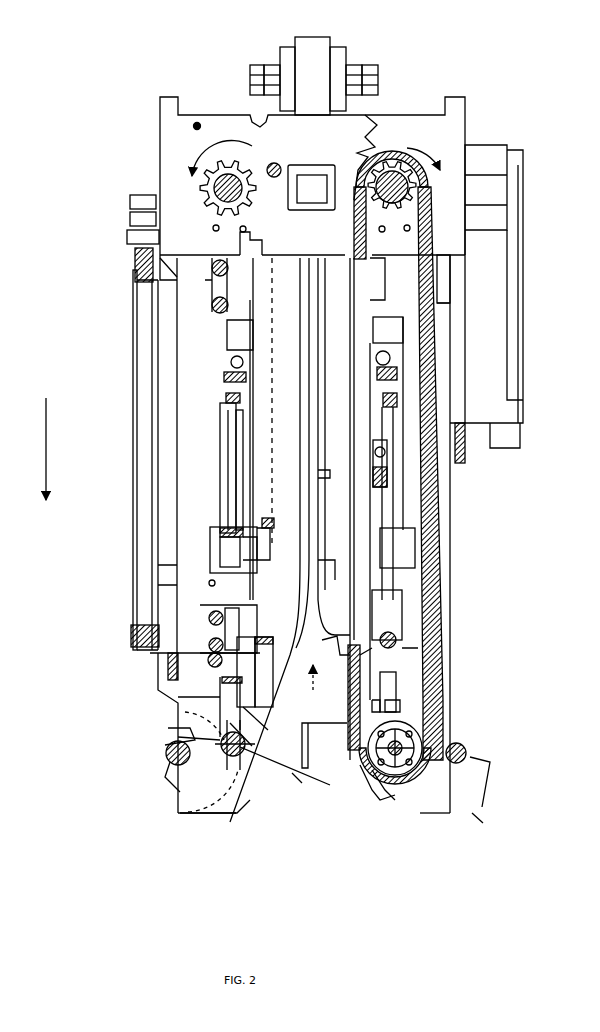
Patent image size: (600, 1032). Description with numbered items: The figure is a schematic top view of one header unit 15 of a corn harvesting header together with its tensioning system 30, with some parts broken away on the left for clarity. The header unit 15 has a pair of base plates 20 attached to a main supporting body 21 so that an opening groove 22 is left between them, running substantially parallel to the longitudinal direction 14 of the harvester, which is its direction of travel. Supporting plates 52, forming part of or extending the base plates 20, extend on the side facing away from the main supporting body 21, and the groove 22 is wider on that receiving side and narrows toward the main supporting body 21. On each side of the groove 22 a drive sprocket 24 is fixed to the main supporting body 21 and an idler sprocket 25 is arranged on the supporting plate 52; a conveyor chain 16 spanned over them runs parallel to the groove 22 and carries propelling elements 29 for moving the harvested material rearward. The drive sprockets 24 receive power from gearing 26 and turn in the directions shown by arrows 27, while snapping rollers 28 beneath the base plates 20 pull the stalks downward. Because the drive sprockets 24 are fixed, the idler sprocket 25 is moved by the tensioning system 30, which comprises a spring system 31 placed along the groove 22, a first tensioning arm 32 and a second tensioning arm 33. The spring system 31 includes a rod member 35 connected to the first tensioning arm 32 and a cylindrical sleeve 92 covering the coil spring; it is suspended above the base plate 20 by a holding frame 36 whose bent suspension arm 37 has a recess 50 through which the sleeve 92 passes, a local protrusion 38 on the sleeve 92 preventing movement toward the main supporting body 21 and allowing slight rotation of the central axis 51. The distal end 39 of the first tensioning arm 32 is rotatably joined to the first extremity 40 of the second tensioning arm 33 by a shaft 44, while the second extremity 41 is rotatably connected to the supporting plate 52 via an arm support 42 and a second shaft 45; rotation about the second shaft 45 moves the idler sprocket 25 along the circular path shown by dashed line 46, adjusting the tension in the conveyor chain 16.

The longitudinal direction 14 is at (33, 449).
The header unit 15 is at (148, 74).
The conveyor chain 16 is at (445, 531).
The base plate 20 is at (177, 328).
The main supporting body 21 is at (176, 190).
The opening groove 22 is at (293, 725).
The drive sprocket 24 is at (390, 160).
The idler sprocket 25 is at (432, 725).
The gearing 26 is at (325, 44).
The arrows 27 is at (306, 154).
The snapping rollers 28 is at (313, 256).
The propelling element 29 is at (418, 662).
The tensioning system 30 is at (450, 608).
The spring system 31 is at (212, 418).
The first tensioning arm 32 is at (248, 715).
The second tensioning arm 33 is at (208, 760).
The rod member 35 is at (230, 674).
The holding frame 36 is at (214, 596).
The suspension arm 37 is at (208, 548).
The local protrusion 38 is at (245, 545).
The distal end 39 is at (255, 752).
The first extremity 40 is at (232, 758).
The second extremity 41 is at (168, 767).
The arm support 42 is at (170, 738).
The shaft 44 is at (368, 775).
The second shaft 45 is at (166, 754).
The dashed line 46 is at (192, 815).
The recess 50 is at (258, 536).
The central axis 51 is at (228, 462).
The supporting plate 52 is at (392, 802).
The cylindrical sleeve 92 is at (228, 480).